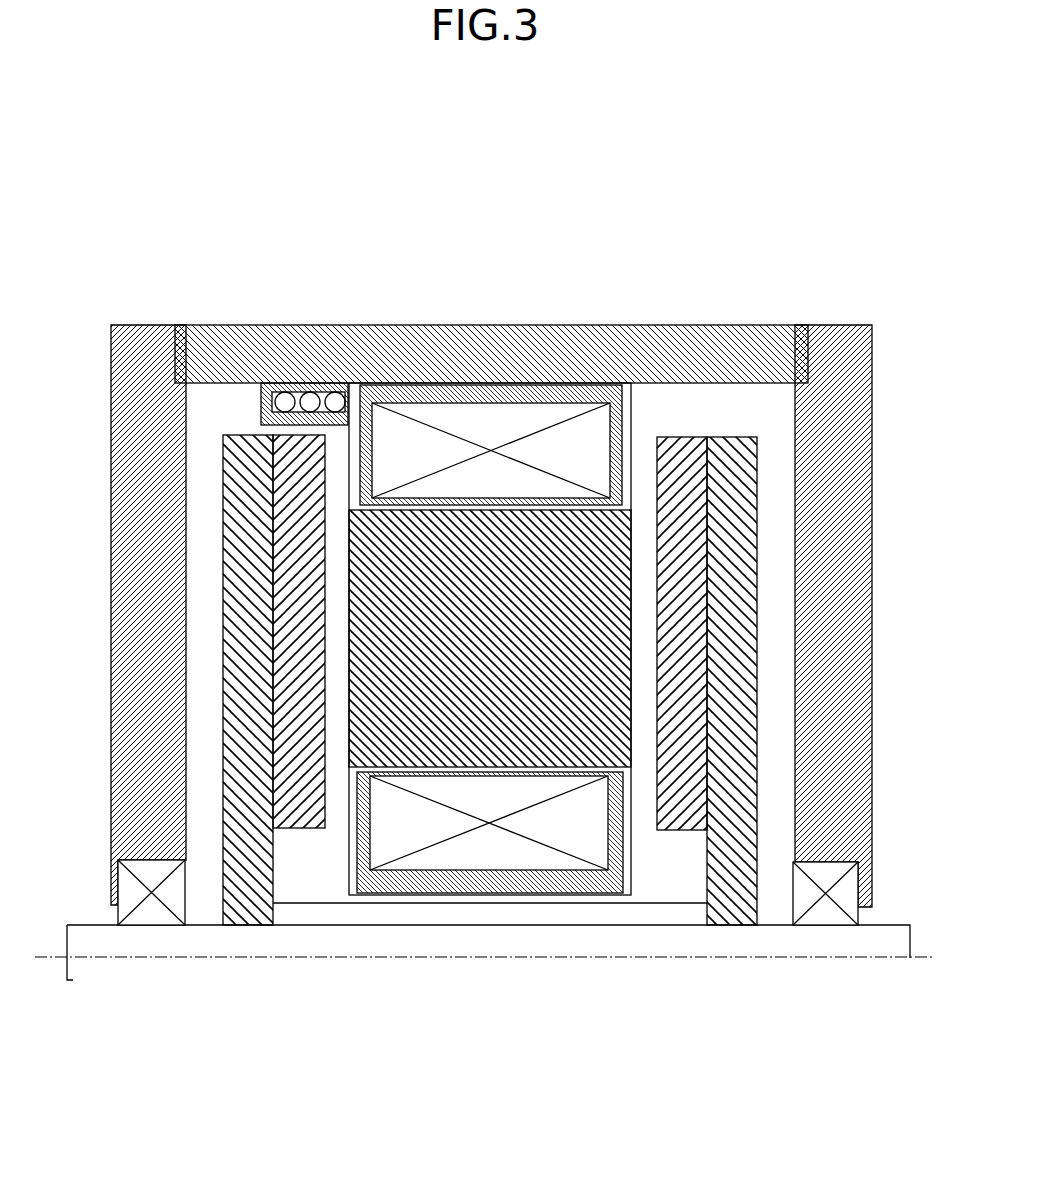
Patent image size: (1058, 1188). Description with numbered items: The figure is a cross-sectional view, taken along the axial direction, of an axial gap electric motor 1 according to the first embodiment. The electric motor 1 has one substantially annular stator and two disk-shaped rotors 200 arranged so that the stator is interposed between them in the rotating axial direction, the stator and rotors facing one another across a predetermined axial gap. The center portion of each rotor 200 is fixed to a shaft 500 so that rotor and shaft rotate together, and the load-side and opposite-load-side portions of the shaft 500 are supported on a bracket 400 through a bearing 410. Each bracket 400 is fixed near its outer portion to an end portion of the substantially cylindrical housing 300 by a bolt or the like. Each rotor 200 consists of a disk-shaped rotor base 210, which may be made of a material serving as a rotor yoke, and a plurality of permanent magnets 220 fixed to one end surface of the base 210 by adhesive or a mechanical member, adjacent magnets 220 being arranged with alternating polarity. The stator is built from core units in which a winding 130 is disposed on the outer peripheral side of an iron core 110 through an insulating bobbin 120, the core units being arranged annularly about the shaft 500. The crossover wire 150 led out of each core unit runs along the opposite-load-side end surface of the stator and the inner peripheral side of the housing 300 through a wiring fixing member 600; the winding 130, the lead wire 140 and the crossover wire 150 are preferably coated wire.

The axial gap electric motor 1 is at (142, 208).
The iron core 110 is at (416, 550).
The insulating bobbin 120 is at (347, 878).
The winding 130 is at (455, 392).
The lead wire 140 is at (508, 888).
The crossover wire 150 is at (297, 392).
The rotor 200 is at (738, 563).
The rotor base 210 is at (745, 437).
The magnet 220 is at (680, 437).
The housing 300 is at (525, 327).
The bracket 400 is at (140, 325).
The bearing 410 is at (150, 920).
The shaft 500 is at (88, 925).
The wiring fixing member 600 is at (262, 403).